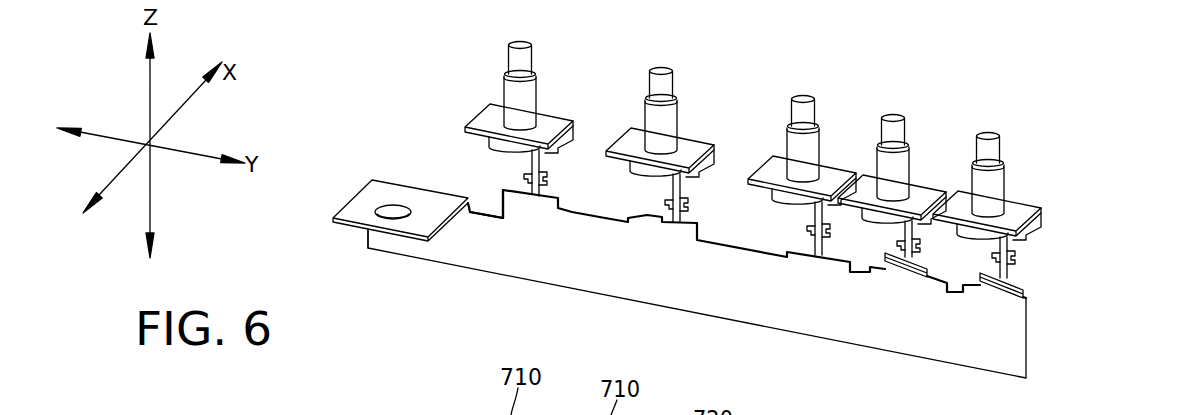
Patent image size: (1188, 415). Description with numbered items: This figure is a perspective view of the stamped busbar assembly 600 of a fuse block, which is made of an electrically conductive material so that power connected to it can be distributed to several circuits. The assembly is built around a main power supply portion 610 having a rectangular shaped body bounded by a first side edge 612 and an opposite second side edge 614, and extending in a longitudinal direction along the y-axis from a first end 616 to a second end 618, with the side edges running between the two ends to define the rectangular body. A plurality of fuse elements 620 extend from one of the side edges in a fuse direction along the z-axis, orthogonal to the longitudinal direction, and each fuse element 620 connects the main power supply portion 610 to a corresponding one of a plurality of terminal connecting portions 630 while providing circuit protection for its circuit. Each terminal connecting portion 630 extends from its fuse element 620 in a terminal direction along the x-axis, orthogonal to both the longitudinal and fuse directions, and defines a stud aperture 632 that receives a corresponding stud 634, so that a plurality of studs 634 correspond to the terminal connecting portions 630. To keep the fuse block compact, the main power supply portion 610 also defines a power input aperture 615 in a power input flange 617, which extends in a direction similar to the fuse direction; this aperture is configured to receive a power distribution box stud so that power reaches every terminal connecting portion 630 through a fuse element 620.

The stamped busbar assembly 600 is at (1040, 358).
The main power supply portion 610 is at (950, 333).
The first side edge 612 is at (522, 281).
The second side edge 614 is at (483, 210).
The power input aperture 615 is at (385, 206).
The first end 616 is at (1028, 318).
The power input flange 617 is at (346, 203).
The second end 618 is at (366, 232).
The fuse elements 620 is at (553, 178).
The terminal connecting portions 630 is at (490, 117).
The stud aperture 632 is at (1005, 203).
The stud 634 is at (903, 133).